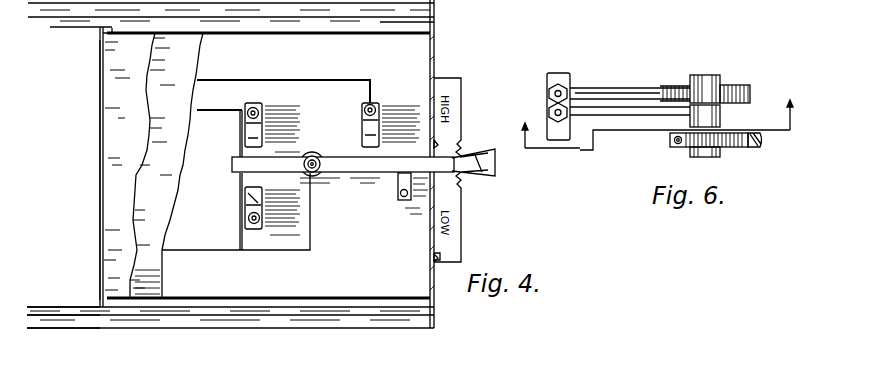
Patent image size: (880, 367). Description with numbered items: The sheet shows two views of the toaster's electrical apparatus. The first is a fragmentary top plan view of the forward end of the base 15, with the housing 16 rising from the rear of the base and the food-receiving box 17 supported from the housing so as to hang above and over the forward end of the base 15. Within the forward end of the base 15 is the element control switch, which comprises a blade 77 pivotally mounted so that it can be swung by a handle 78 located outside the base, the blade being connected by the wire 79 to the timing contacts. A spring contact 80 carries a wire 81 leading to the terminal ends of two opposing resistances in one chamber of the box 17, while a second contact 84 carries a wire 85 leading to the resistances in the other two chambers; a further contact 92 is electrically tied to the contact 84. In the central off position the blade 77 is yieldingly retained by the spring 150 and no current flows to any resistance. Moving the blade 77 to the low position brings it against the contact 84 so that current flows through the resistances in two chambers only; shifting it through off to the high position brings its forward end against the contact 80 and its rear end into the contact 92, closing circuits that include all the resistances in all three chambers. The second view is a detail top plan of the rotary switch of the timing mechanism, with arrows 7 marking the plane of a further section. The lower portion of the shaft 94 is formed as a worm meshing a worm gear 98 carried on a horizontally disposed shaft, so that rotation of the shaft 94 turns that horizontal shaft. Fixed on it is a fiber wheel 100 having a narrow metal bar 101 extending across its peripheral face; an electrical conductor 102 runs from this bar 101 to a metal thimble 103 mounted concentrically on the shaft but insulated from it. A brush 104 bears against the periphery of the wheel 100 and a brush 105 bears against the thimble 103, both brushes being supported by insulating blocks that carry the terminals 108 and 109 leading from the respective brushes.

In FIG. 4, the base 15 is at (297, 290).
In FIG. 4, the housing 16 is at (69, 297).
In FIG. 4, the box 17 is at (112, 231).
In FIG. 4, the blade 77 is at (363, 168).
In FIG. 4, the handle 78 is at (481, 168).
In FIG. 4, the wire 79 is at (312, 238).
In FIG. 4, the spring contact 80 is at (362, 128).
In FIG. 4, the wire 81 is at (346, 73).
In FIG. 4, the second contact 84 is at (245, 141).
In FIG. 4, the wire 85 is at (238, 111).
In FIG. 4, the contact 92 is at (245, 210).
In FIG. 4, the spring 150 is at (403, 184).
In FIG. 6, the section line 7- 7 is at (658, 144).
In FIG. 6, the shaft 94 is at (756, 141).
In FIG. 6, the worm gear 98 is at (680, 141).
In FIG. 6, the fiber wheel 100 is at (748, 94).
In FIG. 6, the metal bar 101 is at (722, 92).
In FIG. 6, the electrical conductor 102 is at (722, 108).
In FIG. 6, the metal thimble 103 is at (730, 121).
In FIG. 6, the brush 104 is at (627, 92).
In FIG. 6, the brush 105 is at (617, 121).
In FIG. 6, the terminal 108 is at (549, 92).
In FIG. 6, the terminal 109 is at (549, 112).